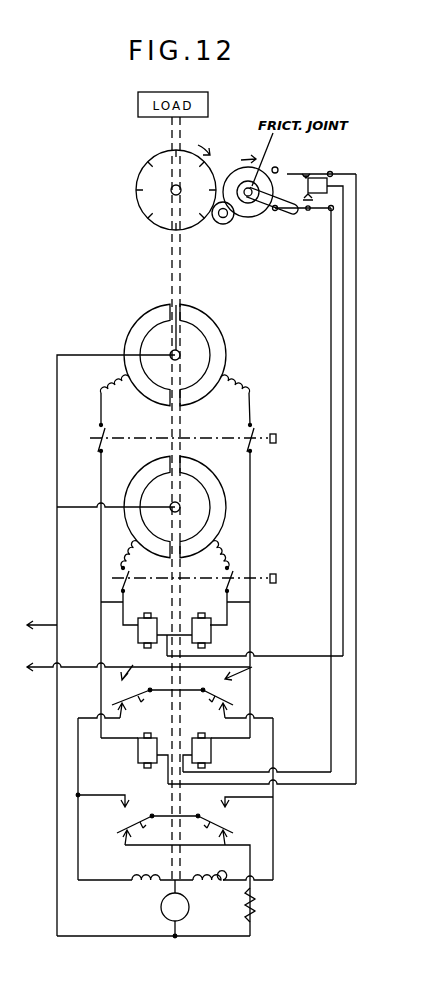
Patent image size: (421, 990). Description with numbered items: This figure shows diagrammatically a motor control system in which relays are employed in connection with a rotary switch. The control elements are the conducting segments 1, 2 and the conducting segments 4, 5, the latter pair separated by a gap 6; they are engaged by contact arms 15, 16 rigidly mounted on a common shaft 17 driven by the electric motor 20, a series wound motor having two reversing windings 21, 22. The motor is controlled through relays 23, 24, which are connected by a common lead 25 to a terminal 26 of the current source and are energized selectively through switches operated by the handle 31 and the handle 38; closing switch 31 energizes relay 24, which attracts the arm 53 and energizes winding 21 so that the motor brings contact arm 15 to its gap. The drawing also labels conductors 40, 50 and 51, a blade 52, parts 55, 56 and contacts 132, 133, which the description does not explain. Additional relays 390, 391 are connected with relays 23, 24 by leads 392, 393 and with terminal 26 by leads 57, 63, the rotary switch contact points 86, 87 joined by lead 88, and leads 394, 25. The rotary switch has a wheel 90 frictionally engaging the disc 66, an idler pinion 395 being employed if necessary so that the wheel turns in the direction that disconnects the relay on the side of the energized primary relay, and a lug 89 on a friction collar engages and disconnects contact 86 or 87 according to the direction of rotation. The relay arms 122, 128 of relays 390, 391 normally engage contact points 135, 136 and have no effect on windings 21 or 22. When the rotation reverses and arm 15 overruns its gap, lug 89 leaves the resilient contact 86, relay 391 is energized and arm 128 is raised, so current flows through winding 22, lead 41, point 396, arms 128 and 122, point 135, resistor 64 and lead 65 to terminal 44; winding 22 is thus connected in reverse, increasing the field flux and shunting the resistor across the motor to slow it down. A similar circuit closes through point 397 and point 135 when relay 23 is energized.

The conducting segment 1 is at (133, 483).
The conducting segment 2 is at (208, 471).
The conducting segment 4 is at (146, 315).
The conducting segment 5 is at (200, 314).
The gap 6 is at (177, 312).
The contact arm 15 is at (199, 489).
The contact arm 16 is at (181, 341).
The common shaft 17 is at (181, 256).
The electric motor 20 is at (184, 915).
The reversing winding 21 is at (138, 885).
The reversing winding 22 is at (208, 885).
The relay 23 is at (143, 615).
The relay 24 is at (198, 615).
The common lead 25 is at (110, 665).
The terminal 26 is at (136, 678).
The handle 31 is at (278, 574).
The handle 38 is at (278, 433).
The conductor 40 is at (78, 822).
The lead 41 is at (283, 833).
The terminal 44 is at (41, 614).
The conductor 50 is at (83, 508).
The conductor 51 is at (57, 410).
The switch blade 52 is at (112, 705).
The relay arm 53 is at (233, 705).
The linkage 55 is at (138, 666).
The linkage 56 is at (250, 670).
The lead 57 is at (331, 500).
The lead 63 is at (356, 510).
The resistor 64 is at (254, 914).
The lead 65 is at (57, 868).
The disc 66 is at (137, 203).
The switch member 86 is at (291, 211).
The switch member 87 is at (300, 174).
The lead 88 is at (317, 178).
The lug 89 is at (268, 208).
The wheel 90 is at (232, 165).
The relay arm 122 is at (118, 833).
The relay arm 128 is at (233, 833).
The contact 132 is at (127, 700).
The contact 133 is at (216, 700).
The contact point 135 is at (122, 842).
The contact point 136 is at (222, 842).
The relay 390 is at (138, 757).
The relay 391 is at (211, 757).
The lead 392 is at (101, 642).
The lead 393 is at (251, 652).
The lead 394 is at (343, 612).
The idler pinion 395 is at (223, 226).
The contact point 396 is at (231, 801).
The contact point 397 is at (117, 797).